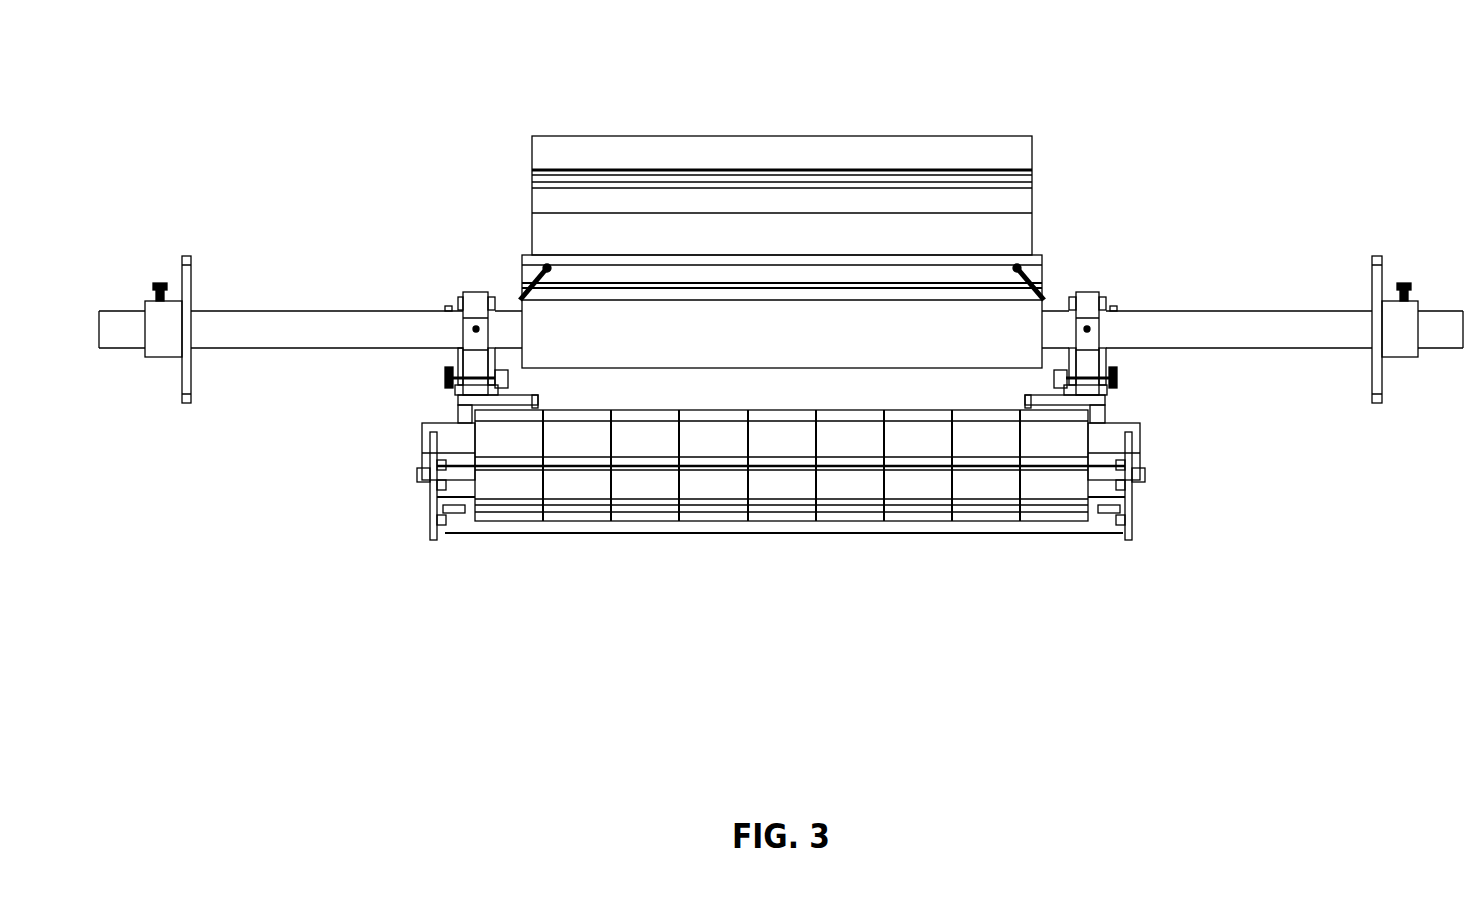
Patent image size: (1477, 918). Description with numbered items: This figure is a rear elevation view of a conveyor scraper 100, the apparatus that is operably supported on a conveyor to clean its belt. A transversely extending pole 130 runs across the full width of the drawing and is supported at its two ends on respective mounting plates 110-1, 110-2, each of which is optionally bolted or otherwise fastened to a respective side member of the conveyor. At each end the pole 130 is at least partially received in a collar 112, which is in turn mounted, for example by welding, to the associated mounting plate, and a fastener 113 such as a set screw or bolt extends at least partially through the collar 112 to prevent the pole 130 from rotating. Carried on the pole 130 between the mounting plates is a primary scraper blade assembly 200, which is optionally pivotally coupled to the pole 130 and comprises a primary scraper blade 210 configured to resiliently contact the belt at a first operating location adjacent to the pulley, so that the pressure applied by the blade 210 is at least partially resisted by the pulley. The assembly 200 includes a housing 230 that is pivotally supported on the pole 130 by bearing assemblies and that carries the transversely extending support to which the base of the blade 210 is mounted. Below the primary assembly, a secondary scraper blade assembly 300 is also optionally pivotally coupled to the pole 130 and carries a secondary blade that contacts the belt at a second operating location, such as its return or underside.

The conveyor scraper 100 is at (348, 132).
The mounting plate 110-1 is at (182, 268).
The mounting plate 110-2 is at (1382, 272).
The collar 112 is at (1403, 357).
The fastener 113 is at (1413, 291).
The pole 130 is at (1300, 311).
The primary scraper blade assembly 200 is at (493, 218).
The primary scraper blade 210 is at (1032, 156).
The housing 230 is at (825, 342).
The secondary scraper blade assembly 300 is at (485, 648).